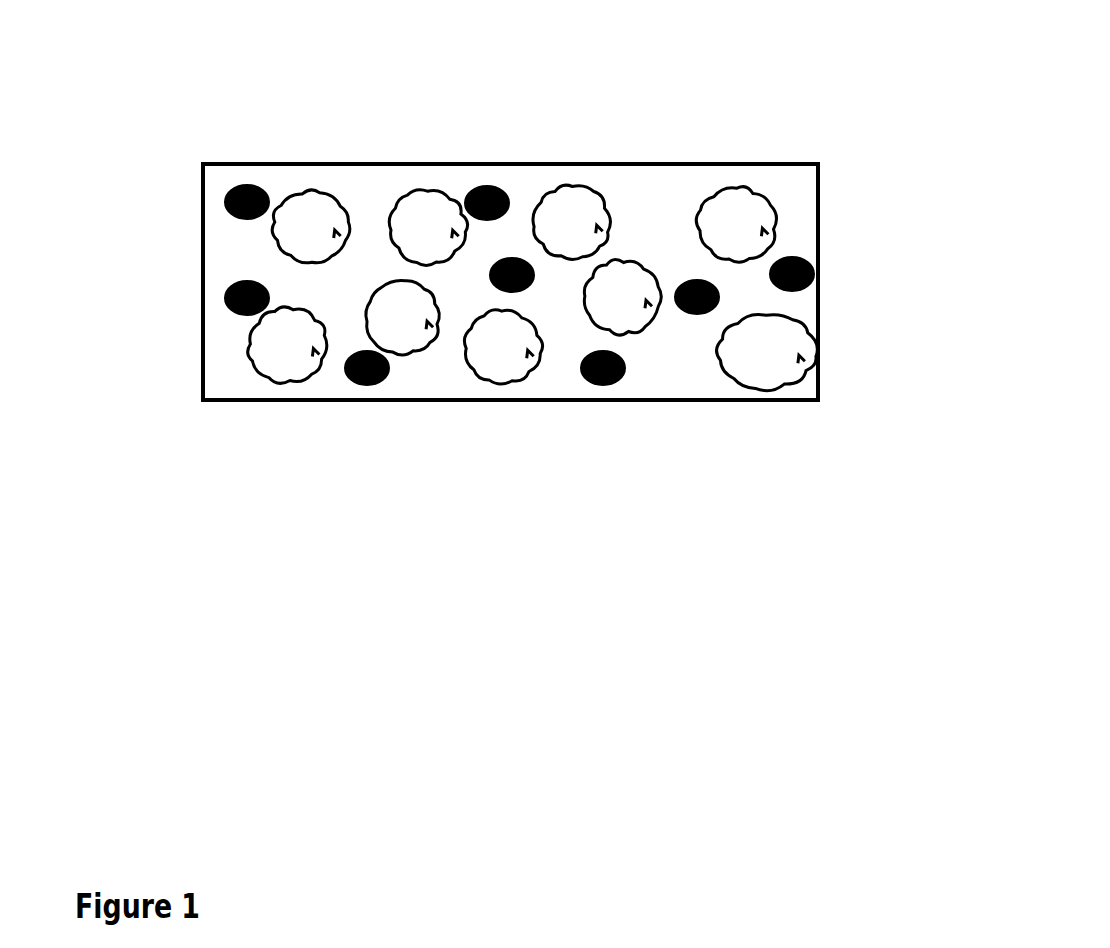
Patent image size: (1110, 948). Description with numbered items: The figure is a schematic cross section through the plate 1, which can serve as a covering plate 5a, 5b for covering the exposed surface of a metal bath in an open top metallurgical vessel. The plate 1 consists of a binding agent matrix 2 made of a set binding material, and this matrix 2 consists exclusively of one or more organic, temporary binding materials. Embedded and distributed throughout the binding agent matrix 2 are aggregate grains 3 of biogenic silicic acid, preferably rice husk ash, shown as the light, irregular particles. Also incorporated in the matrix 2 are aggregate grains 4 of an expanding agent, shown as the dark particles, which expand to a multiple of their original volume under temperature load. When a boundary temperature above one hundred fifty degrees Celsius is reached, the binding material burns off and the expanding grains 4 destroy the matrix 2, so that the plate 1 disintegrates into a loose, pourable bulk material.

The plate 1 is at (525, 204).
The covering plate 5a is at (510, 204).
The covering plate 5b is at (510, 204).
The binding agent matrix 2 is at (630, 195).
The aggregate grains 3 is at (428, 228).
The aggregate grains of expanding agent 4 is at (699, 310).